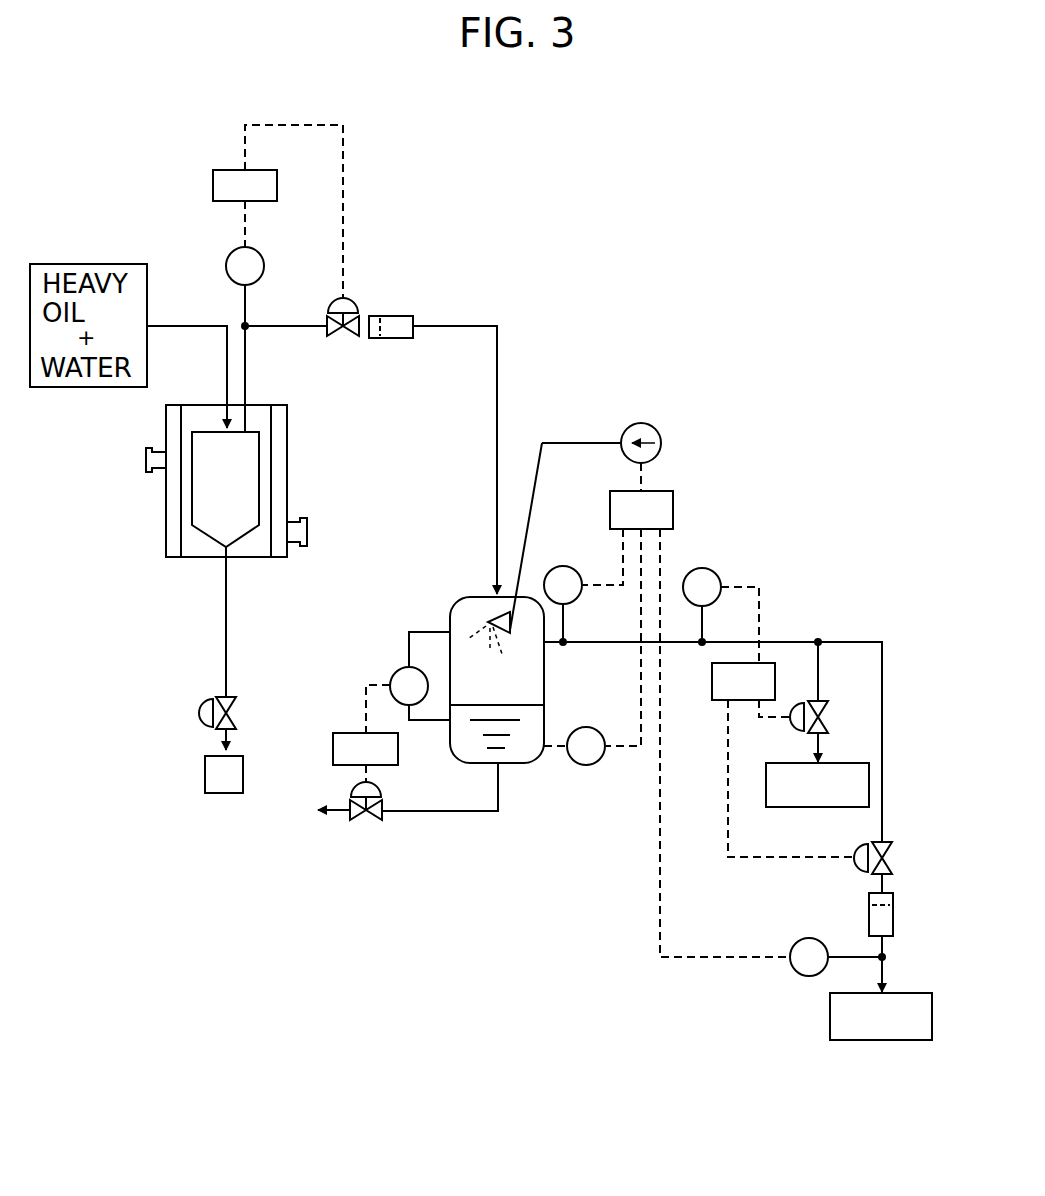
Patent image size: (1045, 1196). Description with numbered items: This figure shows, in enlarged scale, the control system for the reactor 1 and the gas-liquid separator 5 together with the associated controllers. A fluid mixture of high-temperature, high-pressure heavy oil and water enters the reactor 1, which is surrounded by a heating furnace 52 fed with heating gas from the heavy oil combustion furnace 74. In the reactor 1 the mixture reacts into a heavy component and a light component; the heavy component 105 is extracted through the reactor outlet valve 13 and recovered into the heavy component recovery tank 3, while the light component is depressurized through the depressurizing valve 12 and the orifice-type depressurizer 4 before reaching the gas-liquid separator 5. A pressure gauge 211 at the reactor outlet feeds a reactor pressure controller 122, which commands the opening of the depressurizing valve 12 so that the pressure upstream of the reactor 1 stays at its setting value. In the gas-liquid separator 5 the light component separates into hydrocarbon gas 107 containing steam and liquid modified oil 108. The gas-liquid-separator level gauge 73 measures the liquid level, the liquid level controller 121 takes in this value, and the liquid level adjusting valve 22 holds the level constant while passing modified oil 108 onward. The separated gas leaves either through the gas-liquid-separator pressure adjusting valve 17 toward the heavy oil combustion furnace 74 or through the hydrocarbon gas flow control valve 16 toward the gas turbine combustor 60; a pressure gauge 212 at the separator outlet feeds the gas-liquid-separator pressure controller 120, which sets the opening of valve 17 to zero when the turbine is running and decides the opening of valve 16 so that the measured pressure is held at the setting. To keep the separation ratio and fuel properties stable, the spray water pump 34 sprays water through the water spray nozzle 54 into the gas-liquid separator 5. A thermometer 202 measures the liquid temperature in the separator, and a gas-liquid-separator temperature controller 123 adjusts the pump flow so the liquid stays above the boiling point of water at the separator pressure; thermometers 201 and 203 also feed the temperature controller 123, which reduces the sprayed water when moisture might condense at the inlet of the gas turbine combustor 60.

The reactor 1 is at (207, 403).
The heavy component recovery tank 3 is at (235, 795).
The depressurizer 4 is at (398, 316).
The gas-liquid separator 5 is at (512, 768).
The depressurizing valve 12 is at (341, 337).
The reactor outlet valve 13 is at (236, 705).
The hydrocarbon gas flow control valve 16 is at (893, 860).
The gas-liquid-separator pressure adjusting valve 17 is at (829, 716).
The liquid level adjusting valve 22 is at (364, 822).
The spray water pump 34 is at (659, 433).
The heating furnace 52 is at (288, 432).
The water spray nozzle 54 is at (493, 620).
The gas turbine combustor 60 is at (912, 990).
The gas-liquid-separator level gauge 73 is at (390, 673).
The heavy oil combustion furnace 74 is at (797, 810).
The heavy component 105 is at (227, 596).
The hydrocarbon gas 107 is at (546, 645).
The modified oil 108 is at (450, 814).
The gas-liquid-separator pressure controller 120 is at (718, 702).
The liquid level controller 121 is at (347, 732).
The reactor pressure controller 122 is at (215, 170).
The gas-liquid-separator temperature controller 123 is at (673, 492).
The thermometer 201 is at (565, 565).
The thermometer 202 is at (586, 767).
The thermometer 203 is at (805, 978).
The pressure gauge 211 is at (226, 257).
The pressure gauge 212 is at (720, 576).